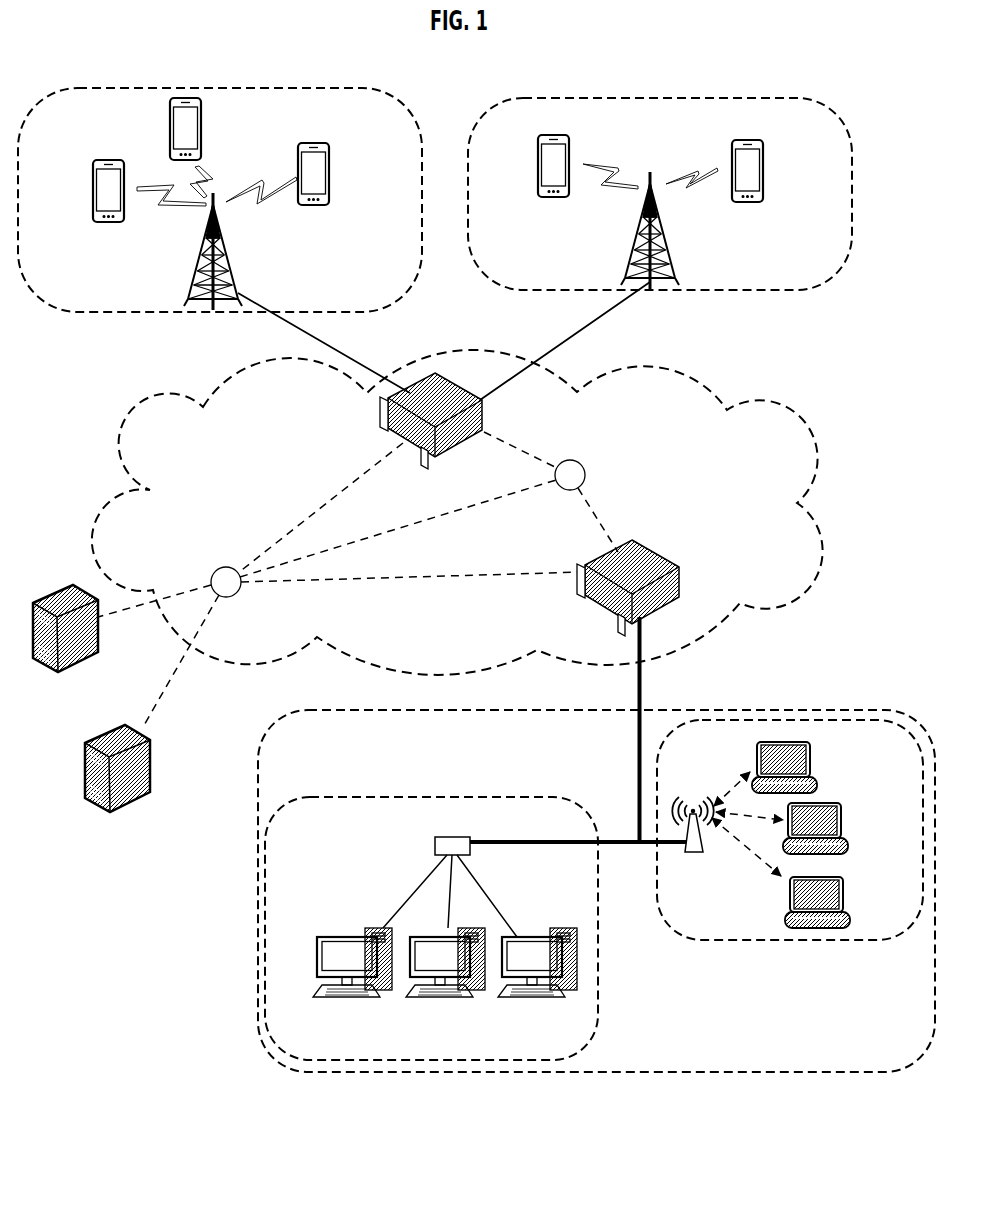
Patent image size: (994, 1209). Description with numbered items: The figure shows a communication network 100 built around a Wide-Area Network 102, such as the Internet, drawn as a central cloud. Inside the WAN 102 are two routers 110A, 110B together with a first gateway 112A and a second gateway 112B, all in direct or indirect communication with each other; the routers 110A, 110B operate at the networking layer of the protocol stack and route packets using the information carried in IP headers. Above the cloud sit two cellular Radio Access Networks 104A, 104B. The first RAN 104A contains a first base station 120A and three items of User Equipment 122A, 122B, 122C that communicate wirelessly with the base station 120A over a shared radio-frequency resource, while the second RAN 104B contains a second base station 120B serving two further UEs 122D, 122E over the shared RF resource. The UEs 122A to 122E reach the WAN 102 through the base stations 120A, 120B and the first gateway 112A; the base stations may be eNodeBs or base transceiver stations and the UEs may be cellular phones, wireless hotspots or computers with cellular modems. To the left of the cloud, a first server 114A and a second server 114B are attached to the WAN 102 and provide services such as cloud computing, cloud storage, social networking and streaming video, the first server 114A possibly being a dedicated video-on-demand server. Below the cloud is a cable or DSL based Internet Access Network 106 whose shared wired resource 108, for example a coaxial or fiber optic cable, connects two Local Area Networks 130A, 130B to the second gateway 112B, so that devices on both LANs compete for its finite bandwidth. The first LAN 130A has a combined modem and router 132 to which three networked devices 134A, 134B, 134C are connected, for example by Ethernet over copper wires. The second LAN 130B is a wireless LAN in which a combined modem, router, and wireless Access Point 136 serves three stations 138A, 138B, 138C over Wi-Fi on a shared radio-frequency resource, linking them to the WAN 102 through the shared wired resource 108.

The communication network 100 is at (135, 66).
The Wide-Area Network 102 is at (697, 388).
The first cellular Radio Access Network 104A is at (272, 88).
The second cellular Radio Access Network 104B is at (757, 98).
The Internet Access Network 106 is at (798, 710).
The shared wired resource 108 is at (638, 810).
The router 110A is at (241, 593).
The router 110B is at (585, 469).
The first gateway 112A is at (381, 420).
The second gateway 112B is at (680, 572).
The first server 114A is at (66, 665).
The second server 114B is at (128, 803).
The first base station 120A is at (228, 250).
The second base station 120B is at (668, 248).
The User Equipment 122A is at (93, 197).
The User Equipment 122B is at (170, 118).
The User Equipment 122C is at (333, 165).
The User Equipment 122D is at (538, 175).
The User Equipment 122E is at (765, 165).
The first Local Area Network 130A is at (420, 797).
The second Local Area Network 130B is at (777, 940).
The combined modem and router 132 is at (436, 838).
The networked device 134A is at (350, 998).
The networked device 134B is at (447, 998).
The networked device 134C is at (536, 998).
The combined modem, router, and wireless Access Point 136 is at (695, 853).
The station 138A is at (812, 755).
The station 138B is at (841, 811).
The station 138C is at (841, 891).